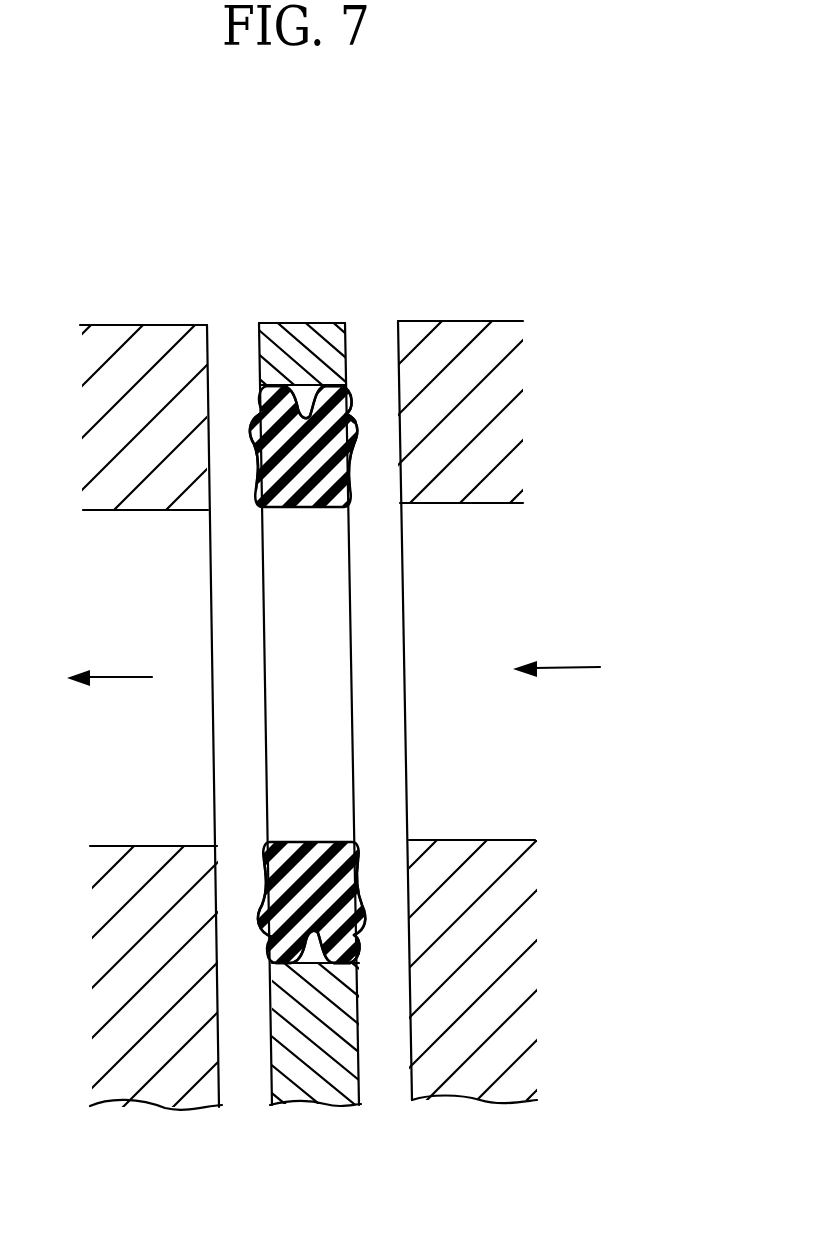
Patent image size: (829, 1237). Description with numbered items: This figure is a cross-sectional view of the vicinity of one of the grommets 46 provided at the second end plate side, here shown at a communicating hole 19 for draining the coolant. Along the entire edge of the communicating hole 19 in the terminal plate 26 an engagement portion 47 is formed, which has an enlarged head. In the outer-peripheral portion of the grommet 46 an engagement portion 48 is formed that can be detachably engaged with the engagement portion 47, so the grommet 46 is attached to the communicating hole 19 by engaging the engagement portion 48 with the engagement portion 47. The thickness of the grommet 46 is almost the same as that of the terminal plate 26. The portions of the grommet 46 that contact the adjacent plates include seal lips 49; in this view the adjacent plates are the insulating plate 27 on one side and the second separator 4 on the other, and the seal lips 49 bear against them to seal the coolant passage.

The second separator 4 is at (482, 343).
The terminal plate 26 is at (309, 312).
The insulating plate 27 is at (147, 350).
The grommet 46 is at (335, 512).
The engagement portion 47 is at (343, 417).
The engagement portion 48 is at (300, 402).
The seal lip 49 is at (250, 436).
The communicating hole for draining the coolant 19 is at (505, 796).